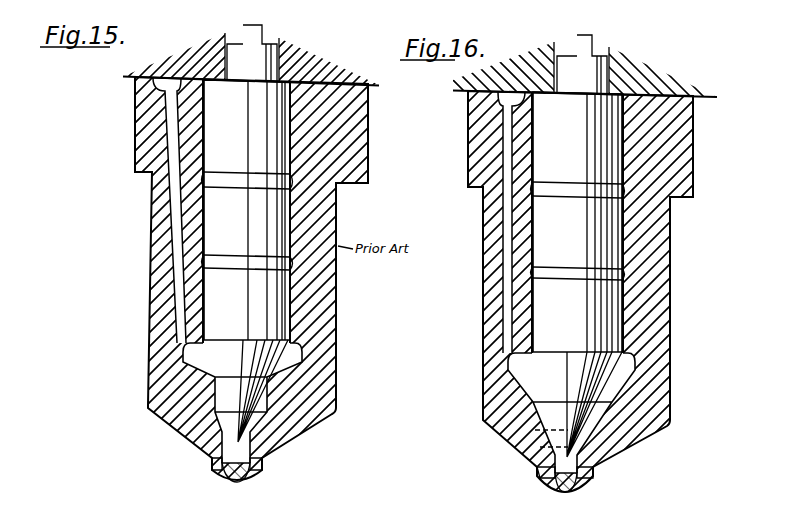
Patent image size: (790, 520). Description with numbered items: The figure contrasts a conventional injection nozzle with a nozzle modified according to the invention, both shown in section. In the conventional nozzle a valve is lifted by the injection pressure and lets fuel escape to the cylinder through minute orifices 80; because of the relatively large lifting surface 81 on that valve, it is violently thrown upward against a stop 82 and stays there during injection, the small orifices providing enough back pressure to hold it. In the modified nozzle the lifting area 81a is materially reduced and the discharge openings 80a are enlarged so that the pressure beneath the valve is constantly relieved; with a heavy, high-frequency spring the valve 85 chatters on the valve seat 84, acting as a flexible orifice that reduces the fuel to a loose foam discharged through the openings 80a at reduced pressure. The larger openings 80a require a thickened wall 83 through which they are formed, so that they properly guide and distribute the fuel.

In FIG. 15, the orifices 80 is at (214, 464).
In FIG. 16, the discharge openings 80a is at (553, 485).
In FIG. 15, the lifting surface 81 is at (273, 365).
In FIG. 16, the lifting area 81a is at (533, 370).
In FIG. 15, the stop 82 is at (290, 83).
In FIG. 16, the stop 82 is at (620, 95).
In FIG. 15, the wall 83 is at (235, 481).
In FIG. 16, the wall 83 is at (580, 497).
In FIG. 16, the valve seat 84 is at (548, 446).
In FIG. 16, the valve 85 is at (547, 430).